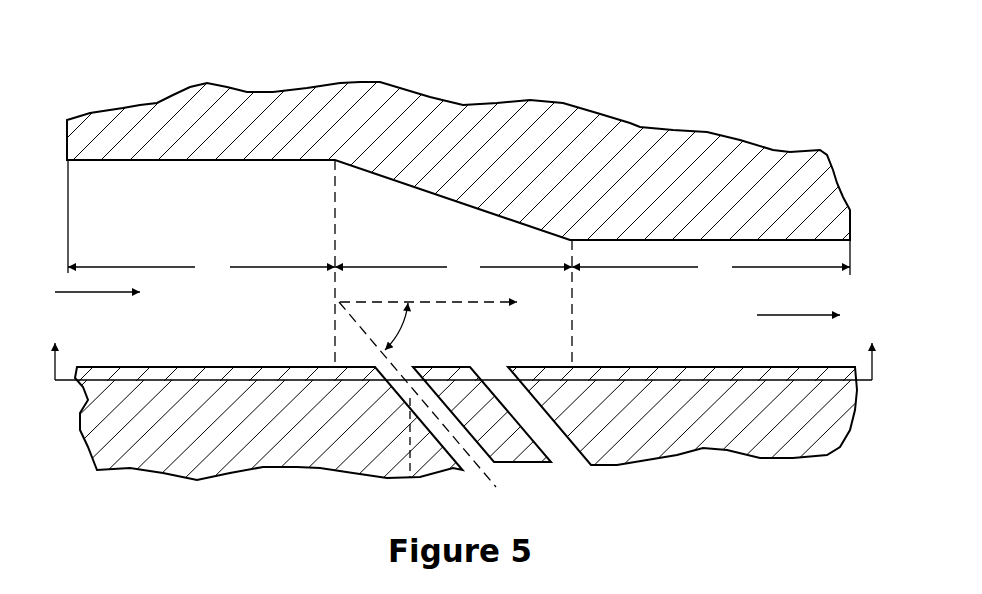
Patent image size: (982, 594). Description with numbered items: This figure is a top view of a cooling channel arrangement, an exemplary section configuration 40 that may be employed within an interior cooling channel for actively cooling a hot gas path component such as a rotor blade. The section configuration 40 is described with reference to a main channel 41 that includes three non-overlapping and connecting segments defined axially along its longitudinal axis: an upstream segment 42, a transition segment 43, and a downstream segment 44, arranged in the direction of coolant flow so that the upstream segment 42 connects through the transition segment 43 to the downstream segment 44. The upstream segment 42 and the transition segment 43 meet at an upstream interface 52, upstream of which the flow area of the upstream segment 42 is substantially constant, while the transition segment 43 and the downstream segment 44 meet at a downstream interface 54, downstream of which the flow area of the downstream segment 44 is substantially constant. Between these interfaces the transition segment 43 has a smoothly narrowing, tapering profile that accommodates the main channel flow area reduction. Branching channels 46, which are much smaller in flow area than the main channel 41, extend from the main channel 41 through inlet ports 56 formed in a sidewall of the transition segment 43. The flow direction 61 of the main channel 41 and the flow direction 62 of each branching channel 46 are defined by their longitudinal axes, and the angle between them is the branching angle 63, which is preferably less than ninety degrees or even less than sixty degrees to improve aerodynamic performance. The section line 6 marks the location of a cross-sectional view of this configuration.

The section configuration 40 is at (482, 92).
The main channel 41 is at (160, 323).
The upstream segment 42 is at (201, 220).
The transition segment 43 is at (453, 267).
The downstream segment 44 is at (711, 260).
The branching channel 46 is at (440, 398).
The upstream interface 52 is at (337, 282).
The downstream interface 54 is at (573, 293).
The inlet port 56 is at (383, 361).
The flow direction of the main channel 61 is at (450, 303).
The flow direction of the branching channel 62 is at (407, 480).
The branching angle 63 is at (402, 335).
The section line 6- 6 is at (463, 348).